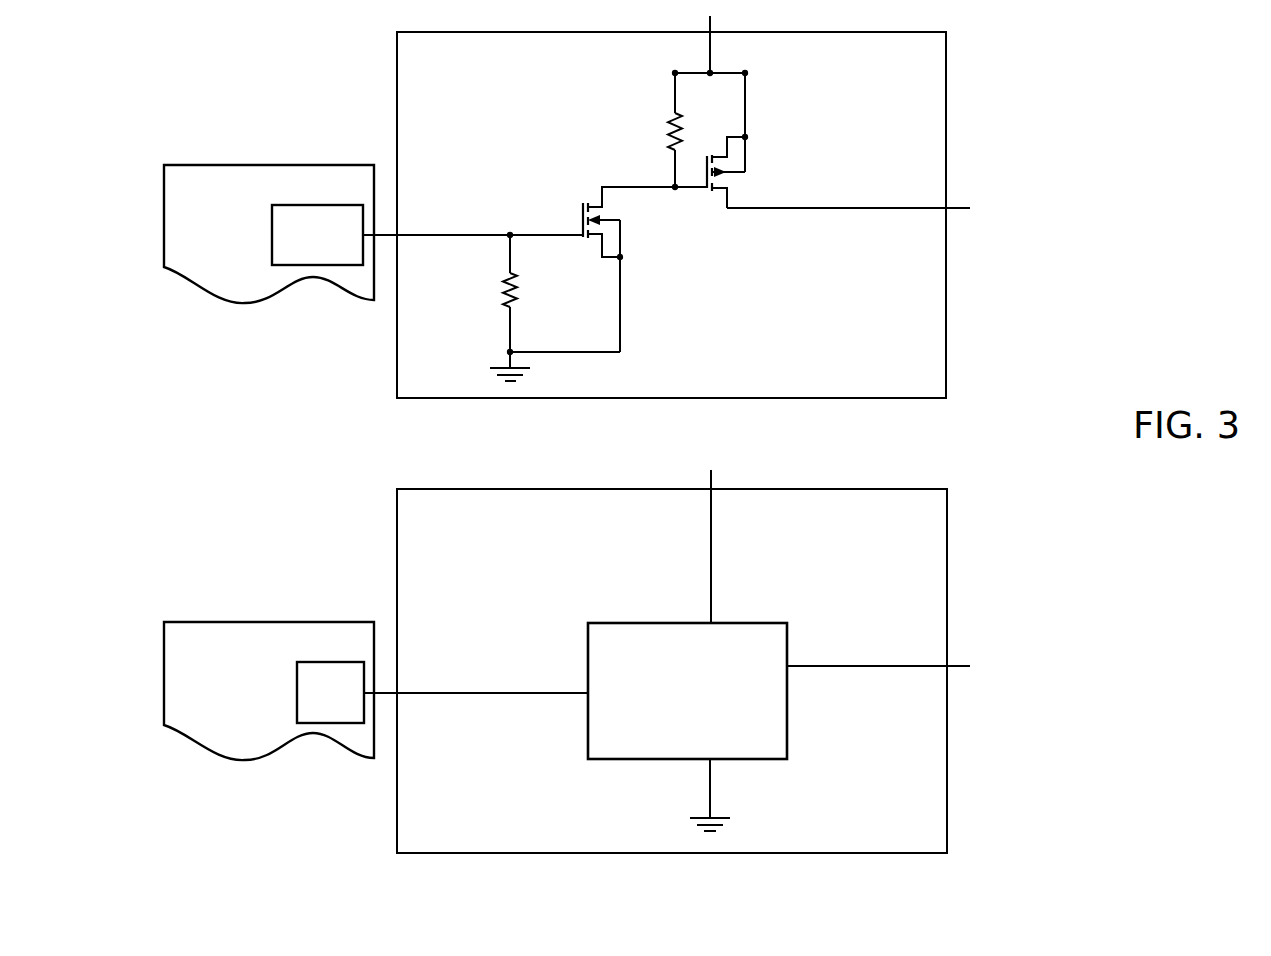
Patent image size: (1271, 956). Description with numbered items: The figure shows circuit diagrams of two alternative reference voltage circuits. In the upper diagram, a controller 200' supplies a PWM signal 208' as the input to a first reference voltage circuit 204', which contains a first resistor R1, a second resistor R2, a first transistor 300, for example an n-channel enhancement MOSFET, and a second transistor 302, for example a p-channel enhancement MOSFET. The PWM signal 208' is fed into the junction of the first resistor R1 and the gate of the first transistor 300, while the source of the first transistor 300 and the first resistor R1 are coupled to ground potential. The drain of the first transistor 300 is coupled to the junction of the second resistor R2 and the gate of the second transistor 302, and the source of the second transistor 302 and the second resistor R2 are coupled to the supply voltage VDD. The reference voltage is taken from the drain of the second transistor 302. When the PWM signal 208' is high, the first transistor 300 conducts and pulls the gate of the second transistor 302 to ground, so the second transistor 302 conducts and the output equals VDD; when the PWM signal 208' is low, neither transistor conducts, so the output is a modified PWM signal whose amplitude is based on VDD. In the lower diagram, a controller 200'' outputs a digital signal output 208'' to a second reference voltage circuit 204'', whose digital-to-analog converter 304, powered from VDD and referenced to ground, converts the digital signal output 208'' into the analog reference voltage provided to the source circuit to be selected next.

The first reference voltage circuit 204' is at (753, 199).
The second reference voltage circuit 204'' is at (753, 649).
The controller 200' is at (373, 234).
The controller 200'' is at (376, 691).
The PWM signal 208' is at (427, 235).
The digital signal output (DO) 208'' is at (442, 692).
The first transistor 300 is at (581, 219).
The second transistor 302 is at (752, 173).
The digital-to-analog converter (DAC) 304 is at (707, 712).
The first resistor R1 is at (492, 293).
The second resistor R2 is at (659, 130).